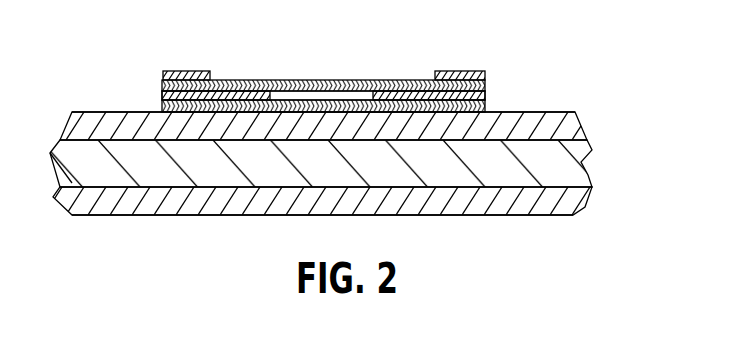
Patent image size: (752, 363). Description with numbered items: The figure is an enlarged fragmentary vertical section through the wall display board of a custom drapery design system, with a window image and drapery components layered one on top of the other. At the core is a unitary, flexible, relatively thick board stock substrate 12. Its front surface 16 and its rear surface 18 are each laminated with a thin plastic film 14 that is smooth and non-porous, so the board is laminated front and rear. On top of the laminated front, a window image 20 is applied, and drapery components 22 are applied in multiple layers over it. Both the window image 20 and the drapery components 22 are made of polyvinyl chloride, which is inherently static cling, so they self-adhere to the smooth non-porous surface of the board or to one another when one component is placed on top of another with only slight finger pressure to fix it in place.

The board stock substrate 12 is at (572, 161).
The thin plastic film 14 is at (575, 125).
The front surface 16 is at (545, 112).
The rear surface 18 is at (548, 215).
The window image 20 is at (265, 72).
The drapery components 22 is at (160, 93).